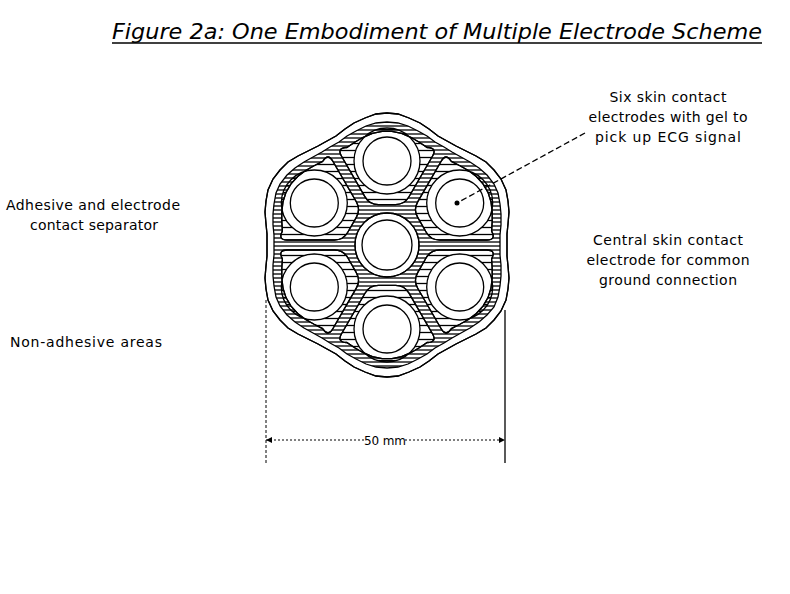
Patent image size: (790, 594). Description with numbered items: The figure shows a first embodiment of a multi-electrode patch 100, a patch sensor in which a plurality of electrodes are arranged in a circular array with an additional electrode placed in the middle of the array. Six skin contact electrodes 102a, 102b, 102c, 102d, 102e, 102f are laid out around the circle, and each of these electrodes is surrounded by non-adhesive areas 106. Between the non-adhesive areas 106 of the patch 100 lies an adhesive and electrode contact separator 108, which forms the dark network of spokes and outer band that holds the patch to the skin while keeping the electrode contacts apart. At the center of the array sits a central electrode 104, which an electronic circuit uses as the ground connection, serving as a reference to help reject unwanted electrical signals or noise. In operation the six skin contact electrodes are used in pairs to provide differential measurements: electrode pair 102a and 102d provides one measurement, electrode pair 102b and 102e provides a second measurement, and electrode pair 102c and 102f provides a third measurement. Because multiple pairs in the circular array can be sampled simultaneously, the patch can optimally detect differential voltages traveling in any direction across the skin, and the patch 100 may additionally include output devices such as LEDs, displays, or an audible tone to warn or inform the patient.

The multi-electrode patch 100 is at (420, 555).
The skin contact electrode 102a is at (392, 147).
The skin contact electrode 102b is at (472, 207).
The skin contact electrode 102c is at (475, 290).
The skin contact electrode 102d is at (388, 340).
The skin contact electrode 102e is at (313, 288).
The skin contact electrode 102f is at (302, 190).
The central electrode 104 is at (387, 246).
The non-adhesive areas 106 is at (318, 319).
The adhesive and electrode contact separator 108 is at (290, 245).